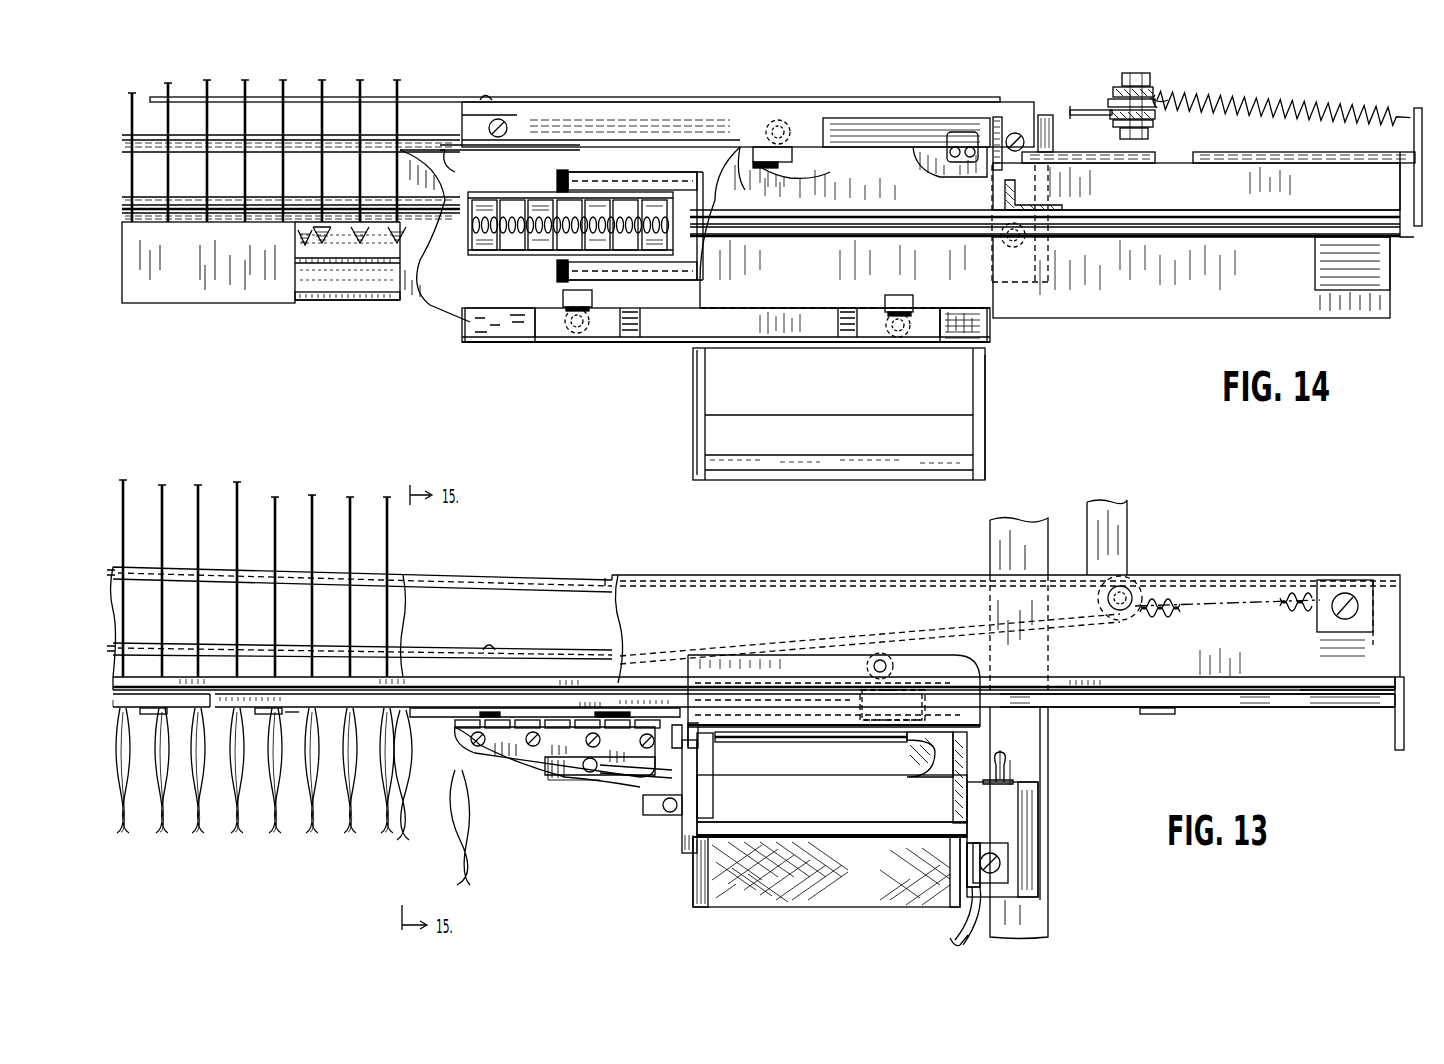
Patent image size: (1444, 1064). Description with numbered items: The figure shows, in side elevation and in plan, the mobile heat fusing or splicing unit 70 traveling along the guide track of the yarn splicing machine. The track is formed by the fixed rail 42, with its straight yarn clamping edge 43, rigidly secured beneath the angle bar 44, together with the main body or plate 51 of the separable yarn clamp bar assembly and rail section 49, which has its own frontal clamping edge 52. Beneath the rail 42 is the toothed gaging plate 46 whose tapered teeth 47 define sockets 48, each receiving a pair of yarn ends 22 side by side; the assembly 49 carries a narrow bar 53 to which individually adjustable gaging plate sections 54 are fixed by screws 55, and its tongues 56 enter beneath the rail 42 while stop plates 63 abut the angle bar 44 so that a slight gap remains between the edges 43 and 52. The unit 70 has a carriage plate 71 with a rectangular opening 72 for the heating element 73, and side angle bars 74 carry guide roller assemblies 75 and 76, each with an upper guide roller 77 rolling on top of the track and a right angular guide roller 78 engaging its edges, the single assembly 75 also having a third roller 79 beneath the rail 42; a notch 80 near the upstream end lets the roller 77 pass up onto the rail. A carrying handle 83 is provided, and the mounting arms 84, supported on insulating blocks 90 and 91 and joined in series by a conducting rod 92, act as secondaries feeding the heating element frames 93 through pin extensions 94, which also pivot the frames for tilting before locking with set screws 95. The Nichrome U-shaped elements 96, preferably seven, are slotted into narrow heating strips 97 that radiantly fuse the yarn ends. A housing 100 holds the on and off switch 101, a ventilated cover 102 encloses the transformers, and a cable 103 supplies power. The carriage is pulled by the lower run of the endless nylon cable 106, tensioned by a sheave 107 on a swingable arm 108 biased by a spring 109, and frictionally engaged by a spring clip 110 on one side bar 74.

In FIG. 14, the yarn ends 22 is at (243, 118).
In FIG. 13, the yarn ends 22 is at (275, 500).
In FIG. 14, the rail 42 is at (1127, 163).
In FIG. 14, the yarn clamping edge 43 is at (905, 217).
In FIG. 14, the angle bar 44 is at (1193, 212).
In FIG. 13, the angle bar 44 is at (708, 575).
In FIG. 14, the yarn spacing or gaging plate 46 is at (340, 225).
In FIG. 14, the tapered teeth 47 is at (332, 252).
In FIG. 14, the yarn gaging recesses or sockets 48 is at (397, 232).
In FIG. 14, the yarn clamp bar assembly and rail section 49 is at (239, 290).
In FIG. 13, the yarn clamp bar assembly and rail section 49 is at (296, 725).
In FIG. 14, the main body or plate 51 is at (1140, 300).
In FIG. 13, the main body or plate 51 is at (1128, 708).
In FIG. 14, the yarn clamping edge 52 is at (850, 236).
In FIG. 14, the bar 53 is at (356, 285).
In FIG. 13, the bar 53 is at (1240, 710).
In FIG. 14, the gaging plate sections 54 is at (322, 300).
In FIG. 13, the gaging plate sections 54 is at (340, 692).
In FIG. 13, the screws 55 is at (265, 715).
In FIG. 13, the tongues 56 is at (1350, 708).
In FIG. 14, the stop plates 63 is at (1390, 272).
In FIG. 14, the mobile heat fusing or splicing unit 70 is at (597, 356).
In FIG. 13, the mobile heat fusing or splicing unit 70 is at (684, 884).
In FIG. 14, the carriage plate 71 is at (738, 150).
In FIG. 13, the carriage plate 71 is at (668, 772).
In FIG. 14, the rectangular opening 72 is at (556, 172).
In FIG. 14, the heating or splicing element 73 is at (470, 310).
In FIG. 13, the heating or splicing element 73 is at (490, 746).
In FIG. 14, the side angle bars 74 is at (655, 103).
In FIG. 13, the side angle bars 74 is at (812, 656).
In FIG. 14, the guide roller assembly 75 is at (805, 118).
In FIG. 14, the guide roller assemblies 76 is at (556, 328).
In FIG. 14, the upper guide roller 77 is at (790, 165).
In FIG. 13, the upper guide roller 77 is at (890, 655).
In FIG. 14, the right angular guide roller 78 is at (780, 118).
In FIG. 13, the right angular guide roller 78 is at (876, 690).
In FIG. 14, the third roller 79 is at (750, 165).
In FIG. 14, the cut-out or notch 80 is at (1175, 162).
In FIG. 14, the carrying handle 83 is at (848, 470).
In FIG. 13, the carrying handle 83 is at (838, 810).
In FIG. 13, the mounting arms 84 is at (705, 762).
In FIG. 13, the insulating block 90 is at (682, 842).
In FIG. 13, the insulating block 91 is at (945, 775).
In FIG. 13, the conducting rod 92 is at (643, 810).
In FIG. 13, the heating element frames 93 is at (515, 755).
In FIG. 13, the lateral pin extensions 94 is at (590, 777).
In FIG. 14, the set screws 95 is at (580, 175).
In FIG. 13, the set screws 95 is at (565, 772).
In FIG. 14, the Nichrome U-shaped elements 96 is at (545, 205).
In FIG. 13, the Nichrome U-shaped elements 96 is at (522, 722).
In FIG. 14, the heating strips 97 is at (654, 215).
In FIG. 14, the housing 100 is at (1045, 115).
In FIG. 13, the housing 100 is at (1010, 820).
In FIG. 13, the on and off switch 101 is at (1006, 765).
In FIG. 13, the ventilated cover 102 is at (790, 907).
In FIG. 13, the cable 103 is at (958, 925).
In FIG. 14, the endless flexible nylon cable 106 is at (432, 97).
In FIG. 13, the endless flexible nylon cable 106 is at (521, 572).
In FIG. 14, the sheave 107 is at (1162, 100).
In FIG. 13, the sheave 107 is at (1140, 590).
In FIG. 14, the vertically swingable arm 108 is at (1113, 93).
In FIG. 14, the spring 109 is at (1300, 110).
In FIG. 13, the spring 109 is at (1172, 630).
In FIG. 14, the spring clip 110 is at (488, 98).
In FIG. 13, the spring clip 110 is at (492, 648).